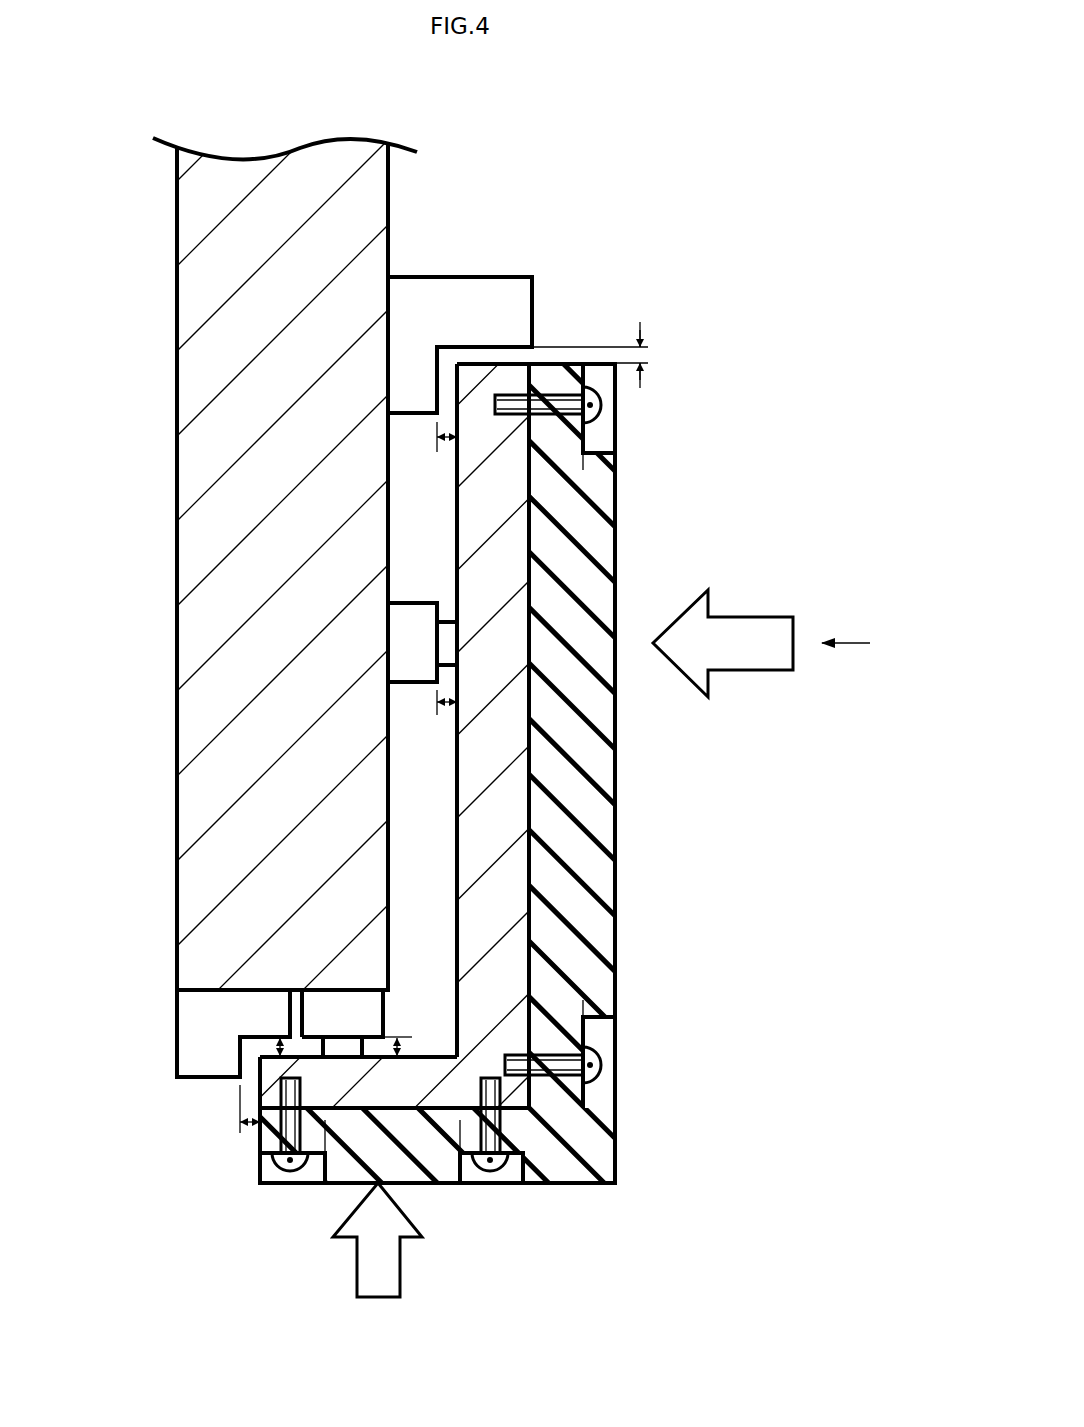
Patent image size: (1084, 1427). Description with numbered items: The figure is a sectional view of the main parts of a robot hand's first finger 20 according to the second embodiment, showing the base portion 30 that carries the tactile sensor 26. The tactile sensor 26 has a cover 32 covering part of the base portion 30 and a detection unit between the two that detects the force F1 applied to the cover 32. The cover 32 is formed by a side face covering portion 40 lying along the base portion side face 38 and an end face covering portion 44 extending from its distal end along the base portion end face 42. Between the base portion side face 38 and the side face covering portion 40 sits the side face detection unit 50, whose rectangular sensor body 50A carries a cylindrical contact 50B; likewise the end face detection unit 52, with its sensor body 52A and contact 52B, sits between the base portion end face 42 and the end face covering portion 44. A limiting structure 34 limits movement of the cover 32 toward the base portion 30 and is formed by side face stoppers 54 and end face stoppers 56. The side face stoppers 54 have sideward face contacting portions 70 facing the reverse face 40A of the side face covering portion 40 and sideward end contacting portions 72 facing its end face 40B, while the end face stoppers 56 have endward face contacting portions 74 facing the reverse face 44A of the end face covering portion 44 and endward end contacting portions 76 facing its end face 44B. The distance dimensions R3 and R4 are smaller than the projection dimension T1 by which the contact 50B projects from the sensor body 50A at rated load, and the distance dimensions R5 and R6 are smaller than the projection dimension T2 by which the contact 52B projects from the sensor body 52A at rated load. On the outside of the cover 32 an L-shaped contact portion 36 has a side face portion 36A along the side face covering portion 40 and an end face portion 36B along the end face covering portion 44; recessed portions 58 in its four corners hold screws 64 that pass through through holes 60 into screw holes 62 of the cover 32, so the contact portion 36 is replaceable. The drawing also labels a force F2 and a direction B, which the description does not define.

The first finger 20 is at (273, 140).
The tactile sensor 26 is at (542, 713).
The base portion 30 is at (353, 157).
The cover 32 is at (528, 362).
The limiting structure 34 is at (492, 297).
The contact portion 36 is at (642, 713).
The side face portion 36A is at (598, 813).
The end face portion 36B is at (453, 1172).
The base portion side face 38 is at (542, 804).
The side face covering portion 40 is at (542, 750).
The reverse face 40A is at (530, 543).
The end face 40B is at (457, 390).
The base portion end face 42 is at (288, 1008).
The end face covering portion 44 is at (542, 804).
The reverse face 44A is at (443, 1090).
The end face 44B is at (260, 1090).
The side face detection unit 50 is at (560, 682).
The sensor body 50A is at (425, 673).
The contact 50B is at (448, 648).
The end face detection unit 52 is at (517, 990).
The sensor body 52A is at (370, 1000).
The contact 52B is at (350, 1040).
The side face stopper 54 is at (533, 272).
The end face stopper 56 is at (420, 1026).
The recessed portion 58 is at (607, 387).
The through hole 60 is at (570, 420).
The screw hole 62 is at (595, 485).
The screw 64 is at (603, 423).
The sideward face contacting portion 70 is at (465, 360).
The sideward end contacting portion 72 is at (532, 300).
The endward face contacting portion 74 is at (248, 1037).
The endward end contacting portion 76 is at (245, 1058).
The distance dimension R3 is at (442, 448).
The distance dimension R4 is at (248, 1127).
The distance dimension R5 is at (290, 1045).
The distance dimension R6 is at (643, 350).
The projection dimension T1 is at (447, 712).
The projection dimension T2 is at (400, 1050).
The force F1 is at (733, 630).
The force F2 is at (393, 1283).
The direction B is at (855, 644).